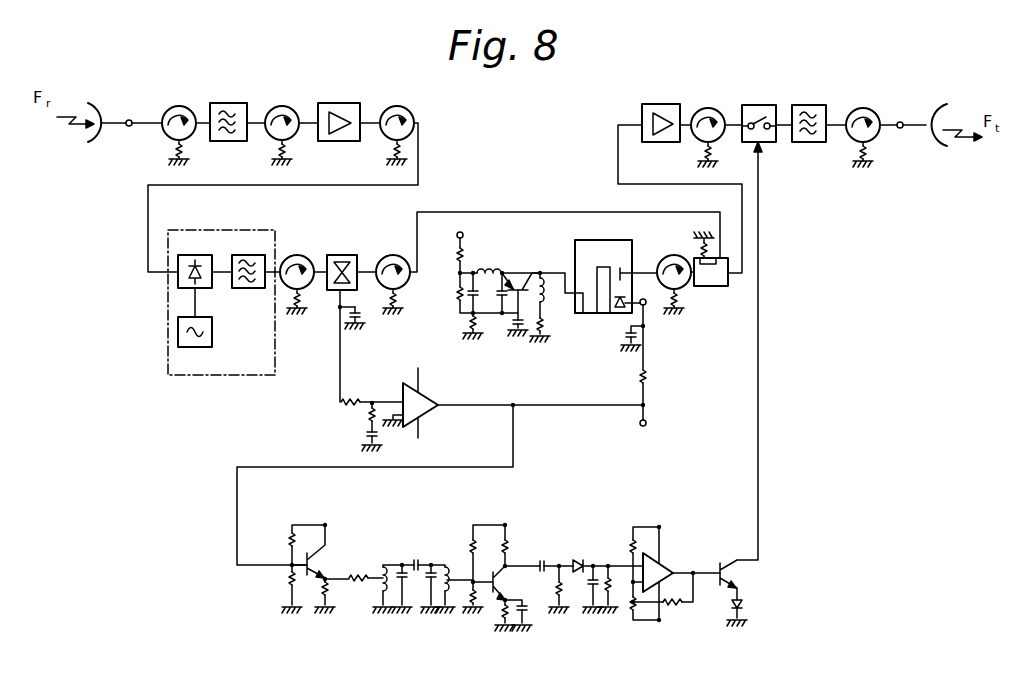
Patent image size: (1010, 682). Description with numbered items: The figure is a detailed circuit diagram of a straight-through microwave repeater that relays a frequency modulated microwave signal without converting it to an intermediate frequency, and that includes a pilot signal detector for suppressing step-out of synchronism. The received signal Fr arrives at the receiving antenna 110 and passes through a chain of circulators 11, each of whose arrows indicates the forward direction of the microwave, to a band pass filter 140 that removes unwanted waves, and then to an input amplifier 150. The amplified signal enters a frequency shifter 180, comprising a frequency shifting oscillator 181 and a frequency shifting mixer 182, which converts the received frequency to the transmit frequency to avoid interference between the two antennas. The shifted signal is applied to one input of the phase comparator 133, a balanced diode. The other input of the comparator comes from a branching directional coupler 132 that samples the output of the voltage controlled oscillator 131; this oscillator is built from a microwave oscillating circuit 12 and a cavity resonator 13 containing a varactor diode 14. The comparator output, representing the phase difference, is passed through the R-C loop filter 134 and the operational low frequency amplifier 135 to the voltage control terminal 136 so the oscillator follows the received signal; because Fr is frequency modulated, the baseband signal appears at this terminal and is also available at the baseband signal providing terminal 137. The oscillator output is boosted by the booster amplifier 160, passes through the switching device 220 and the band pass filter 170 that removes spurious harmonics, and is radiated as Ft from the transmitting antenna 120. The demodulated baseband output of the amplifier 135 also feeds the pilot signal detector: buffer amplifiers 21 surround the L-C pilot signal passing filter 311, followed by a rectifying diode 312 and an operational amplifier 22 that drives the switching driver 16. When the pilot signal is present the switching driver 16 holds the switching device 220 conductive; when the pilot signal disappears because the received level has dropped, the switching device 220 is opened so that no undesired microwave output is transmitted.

The receiving antenna 110 is at (96, 103).
The circulator 11 is at (179, 106).
The band pass filter 140 is at (234, 103).
The input amplifier 150 is at (348, 103).
The booster amplifier 160 is at (659, 104).
The switching device 220 is at (764, 105).
The band pass filter 170 is at (812, 105).
The transmitting antenna 120 is at (942, 104).
The frequency shifter 180 is at (246, 231).
The frequency shifting mixer 182 is at (187, 256).
The frequency shifting oscillator 181 is at (213, 331).
The phase comparator 133 is at (342, 255).
The voltage controlled oscillator 131 is at (516, 211).
The microwave oscillating circuit 12 is at (503, 271).
The cavity resonator 13 is at (598, 240).
The varactor diode 14 is at (618, 311).
The voltage control terminal 136 is at (646, 306).
The branching directional coupler 132 is at (718, 287).
The loop filter 134 is at (363, 400).
The low frequency amplifier 135 is at (434, 396).
The baseband signal providing terminal 137 is at (647, 424).
The buffer amplifier 21 is at (307, 521).
The pilot signal passing filter 311 is at (412, 560).
The rectifying diode 312 is at (583, 560).
The amplifier 22 is at (638, 523).
The switching driver 16 is at (733, 553).